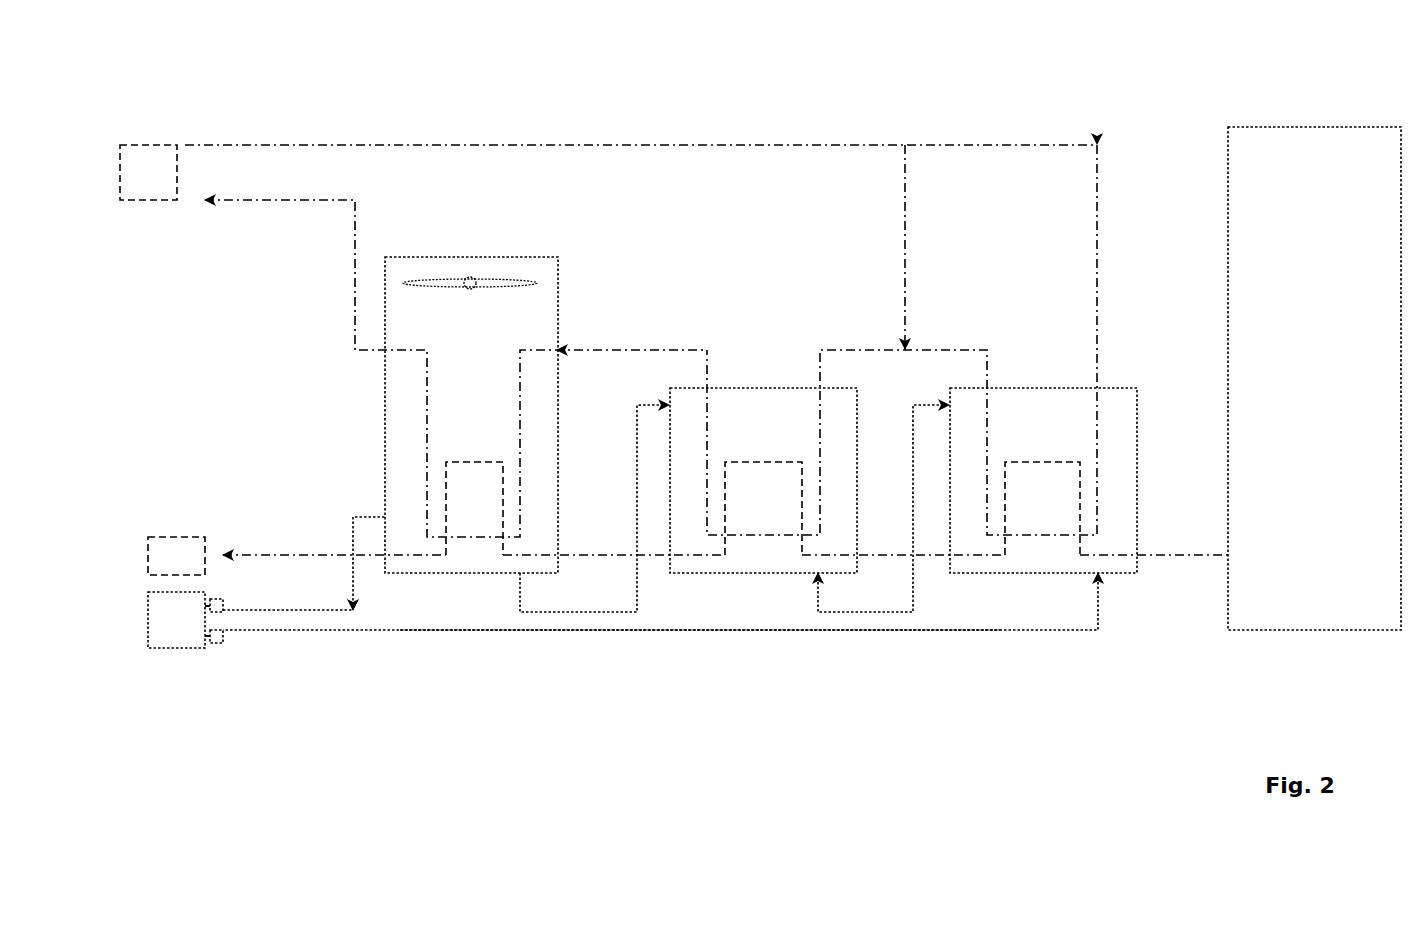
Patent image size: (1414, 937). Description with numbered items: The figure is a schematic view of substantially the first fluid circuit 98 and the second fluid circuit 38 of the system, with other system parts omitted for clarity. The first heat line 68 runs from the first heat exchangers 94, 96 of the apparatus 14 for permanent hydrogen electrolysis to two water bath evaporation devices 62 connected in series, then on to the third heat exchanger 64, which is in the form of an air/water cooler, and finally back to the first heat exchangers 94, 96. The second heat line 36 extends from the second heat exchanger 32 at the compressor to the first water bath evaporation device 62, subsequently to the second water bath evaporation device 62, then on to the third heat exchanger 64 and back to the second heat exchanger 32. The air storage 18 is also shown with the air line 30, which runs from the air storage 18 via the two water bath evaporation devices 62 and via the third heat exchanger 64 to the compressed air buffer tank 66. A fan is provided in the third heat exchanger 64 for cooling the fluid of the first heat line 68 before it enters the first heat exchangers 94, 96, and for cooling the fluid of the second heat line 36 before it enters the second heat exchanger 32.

The apparatus for permanent hydrogen electrolysis 14 is at (160, 648).
The air storage 18 is at (1255, 632).
The air line 30 is at (1183, 555).
The second heat exchanger 32 is at (147, 202).
The second heat line 36 is at (352, 145).
The second fluid circuit 38 is at (688, 147).
The water bath evaporation device 62 is at (765, 573).
The third heat exchanger 64 is at (440, 573).
The compressed air buffer tank 66 is at (150, 537).
The first heat line 68 is at (372, 517).
The first heat exchanger 94 is at (222, 643).
The first heat exchanger 96 is at (228, 612).
The first fluid circuit 98 is at (640, 630).